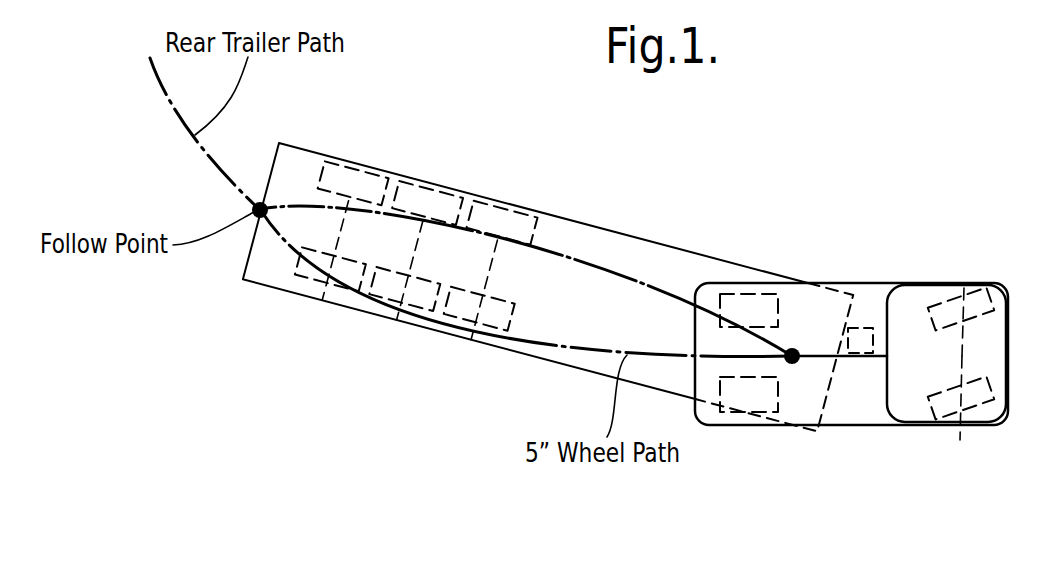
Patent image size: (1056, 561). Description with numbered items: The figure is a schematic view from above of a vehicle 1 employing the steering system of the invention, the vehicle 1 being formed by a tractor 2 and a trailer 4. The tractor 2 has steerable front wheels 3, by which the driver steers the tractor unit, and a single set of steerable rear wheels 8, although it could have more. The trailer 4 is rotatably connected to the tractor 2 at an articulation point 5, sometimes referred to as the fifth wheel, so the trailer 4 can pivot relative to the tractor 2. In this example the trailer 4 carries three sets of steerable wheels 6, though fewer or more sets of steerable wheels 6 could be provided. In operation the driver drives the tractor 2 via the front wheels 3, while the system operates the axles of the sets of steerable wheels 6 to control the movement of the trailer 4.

The vehicle 1 is at (800, 230).
The tractor 2 is at (964, 288).
The steerable front wheels 3 is at (960, 440).
The trailer 4 is at (587, 224).
The articulation point 5 is at (795, 364).
The steerable wheels 6 is at (322, 300).
The steerable rear wheels 8 is at (755, 392).